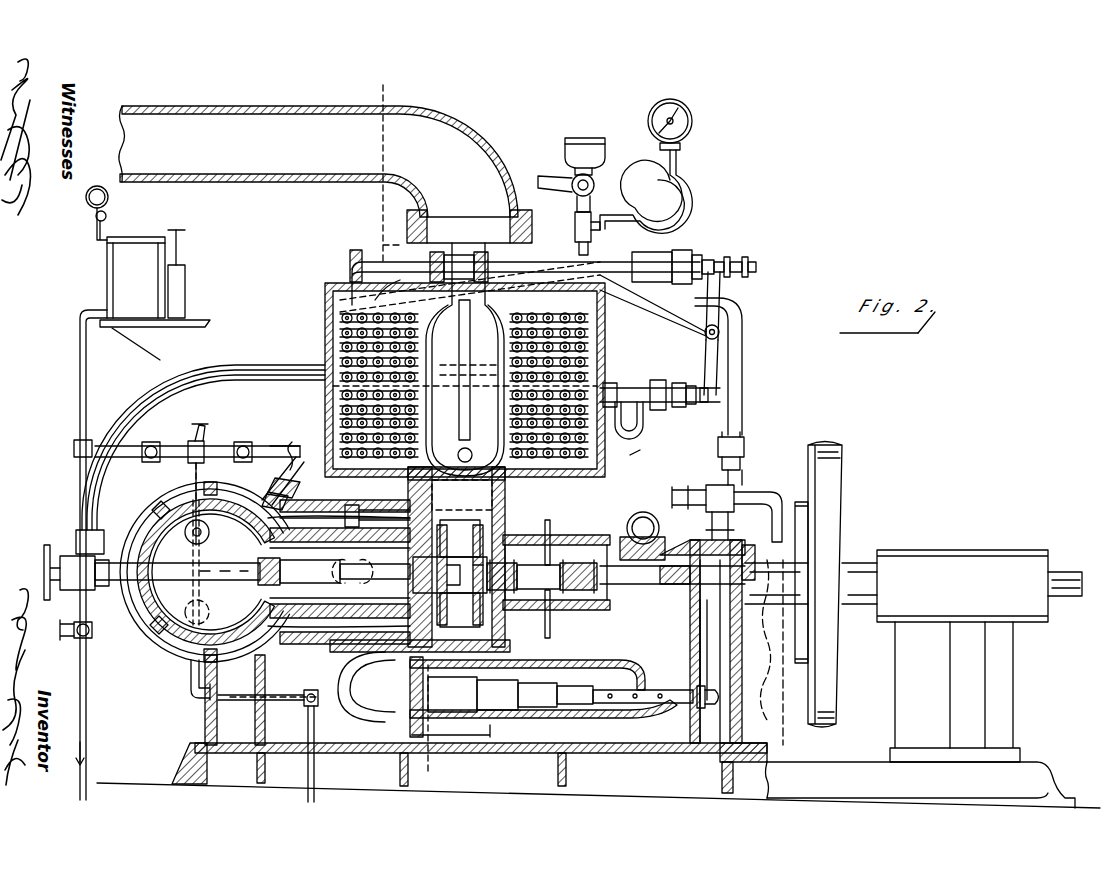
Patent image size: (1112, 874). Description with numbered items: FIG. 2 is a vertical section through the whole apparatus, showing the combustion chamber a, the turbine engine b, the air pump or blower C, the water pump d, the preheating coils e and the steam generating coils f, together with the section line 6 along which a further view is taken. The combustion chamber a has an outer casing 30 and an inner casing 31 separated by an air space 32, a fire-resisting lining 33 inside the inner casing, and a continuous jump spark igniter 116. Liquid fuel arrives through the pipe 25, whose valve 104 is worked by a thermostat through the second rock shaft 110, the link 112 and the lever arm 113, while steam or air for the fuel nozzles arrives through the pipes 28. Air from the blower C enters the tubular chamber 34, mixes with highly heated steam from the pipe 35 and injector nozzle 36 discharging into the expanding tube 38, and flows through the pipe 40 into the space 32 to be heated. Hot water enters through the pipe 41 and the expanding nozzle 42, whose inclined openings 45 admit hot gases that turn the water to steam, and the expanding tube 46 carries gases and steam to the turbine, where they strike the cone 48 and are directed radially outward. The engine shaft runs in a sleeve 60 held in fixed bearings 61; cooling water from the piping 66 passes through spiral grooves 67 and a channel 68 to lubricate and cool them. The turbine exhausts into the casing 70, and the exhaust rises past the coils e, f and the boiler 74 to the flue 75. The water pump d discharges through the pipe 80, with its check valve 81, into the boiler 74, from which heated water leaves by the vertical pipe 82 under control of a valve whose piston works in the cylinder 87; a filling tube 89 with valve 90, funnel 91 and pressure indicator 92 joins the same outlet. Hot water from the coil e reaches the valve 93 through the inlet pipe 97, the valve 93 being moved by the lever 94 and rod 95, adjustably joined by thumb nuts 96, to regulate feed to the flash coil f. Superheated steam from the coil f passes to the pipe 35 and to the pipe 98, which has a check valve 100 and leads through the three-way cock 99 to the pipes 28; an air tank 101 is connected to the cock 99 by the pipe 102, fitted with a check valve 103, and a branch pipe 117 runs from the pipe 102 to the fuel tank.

The section line 6 is at (406, 425).
The fuel supply pipe 25 is at (282, 697).
The steam pipe 28 is at (190, 476).
The outer casing 30 is at (165, 648).
The inner casing 31 is at (150, 525).
The air space 32 is at (79, 580).
The fire-resisting lining 33 is at (177, 682).
The tubular chamber 34 is at (590, 720).
The steam pipe 35 is at (690, 671).
The injector nozzle 36 is at (640, 690).
The expanding tube 38 is at (520, 712).
The pipe 40 is at (420, 681).
The water pipe 41 is at (86, 492).
The water nozzle 42 is at (226, 580).
The inclined openings 45 is at (148, 618).
The expanding tube 46 is at (334, 571).
The cone 48 is at (460, 570).
The sleeve 60 is at (550, 592).
The fixed bearings 61 is at (512, 612).
The piping 66 is at (550, 522).
The spiral grooves 67 is at (575, 560).
The channel 68 is at (585, 610).
The exhaust casing 70 is at (515, 530).
The boiler 74 is at (465, 359).
The flue 75 is at (465, 142).
The pump discharge pipe 80 is at (743, 357).
The check valve 81 is at (744, 445).
The vertical pipe 82 is at (475, 395).
The cylinder 87 is at (606, 262).
The filling tube 89 is at (575, 209).
The valve 90 is at (594, 180).
The funnel 91 is at (588, 140).
The pressure indicator 92 is at (692, 121).
The valve 93 is at (697, 405).
The lever 94 is at (710, 354).
The rod 95 is at (700, 262).
The thumb nuts 96 is at (750, 262).
The inlet pipe 97 is at (646, 420).
The steam pipe 98 is at (285, 447).
The three-way cock 99 is at (212, 436).
The check valve 100 is at (244, 443).
The air tank 101 is at (108, 276).
The air pipe 102 is at (80, 364).
The check valve 103 is at (197, 440).
The fuel valve 104 is at (304, 702).
The second rock shaft 110 is at (345, 568).
The link 112 is at (338, 652).
The lever arm 113 is at (340, 700).
The jump spark igniter 116 is at (275, 484).
The branch pipe 117 is at (80, 716).
The combustion chamber a is at (205, 572).
The turbine engine b is at (470, 650).
The air pump or blower C is at (632, 520).
The water pump d is at (702, 641).
The preheating coils e is at (606, 353).
The steam generating coils f is at (647, 446).